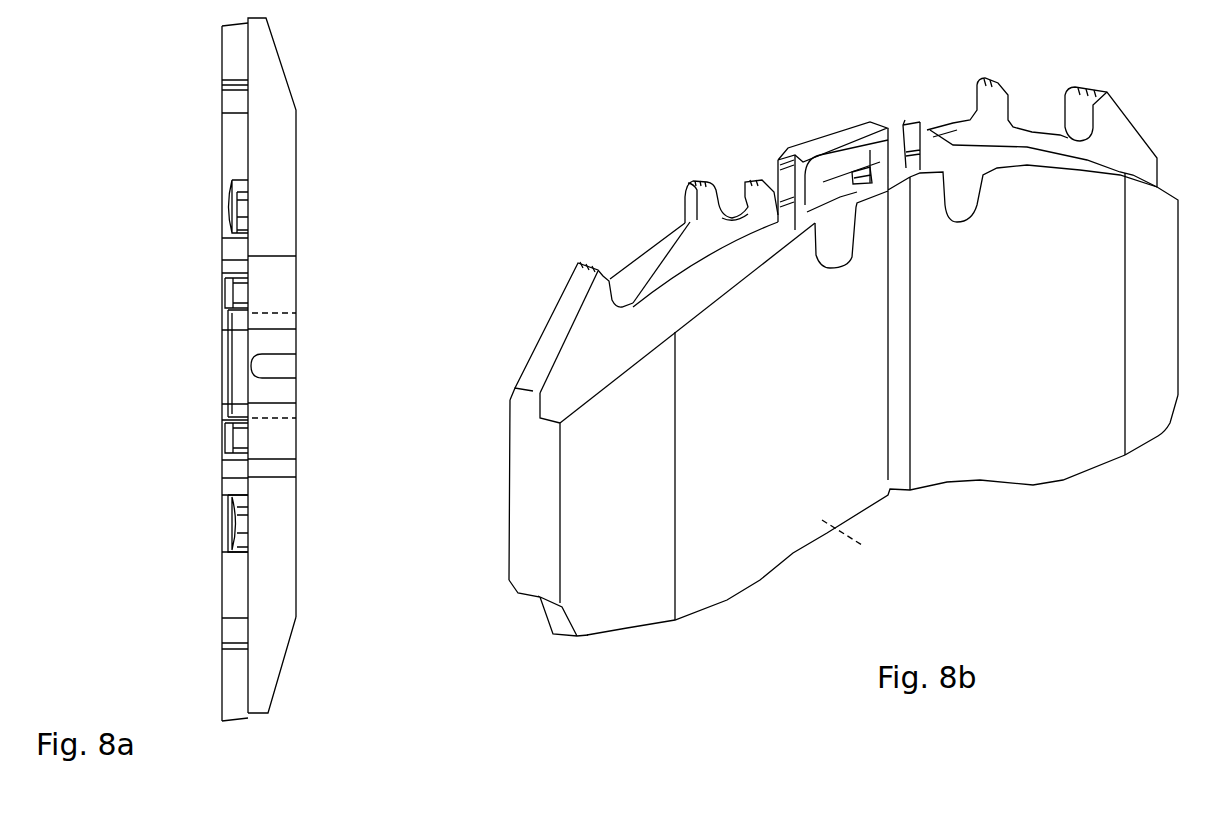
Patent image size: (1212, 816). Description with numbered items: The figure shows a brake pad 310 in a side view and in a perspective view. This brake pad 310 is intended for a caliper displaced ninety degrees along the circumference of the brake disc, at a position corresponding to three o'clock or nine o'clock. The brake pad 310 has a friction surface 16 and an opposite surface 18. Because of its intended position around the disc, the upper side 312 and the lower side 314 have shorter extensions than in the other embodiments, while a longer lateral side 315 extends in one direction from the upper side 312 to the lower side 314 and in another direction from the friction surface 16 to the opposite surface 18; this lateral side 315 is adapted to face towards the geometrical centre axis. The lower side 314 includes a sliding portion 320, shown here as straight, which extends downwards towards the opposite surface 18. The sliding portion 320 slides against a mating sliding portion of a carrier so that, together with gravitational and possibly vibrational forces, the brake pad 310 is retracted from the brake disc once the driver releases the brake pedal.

In FIG. 8a, the brake pad 310 is at (406, 112).
In FIG. 8b, the brake pad 310 is at (686, 120).
In FIG. 8a, the upper side 312 is at (237, 22).
In FIG. 8a, the lower side 314 is at (253, 718).
In FIG. 8b, the lower side 314 is at (535, 483).
In FIG. 8b, the lateral side 315 is at (862, 545).
In FIG. 8a, the sliding portion 320 is at (238, 720).
In FIG. 8b, the sliding portion 320 is at (535, 530).
In FIG. 8a, the friction surface 16 is at (297, 517).
In FIG. 8b, the friction surface 16 is at (1030, 424).
In FIG. 8a, the opposite surface 18 is at (222, 457).